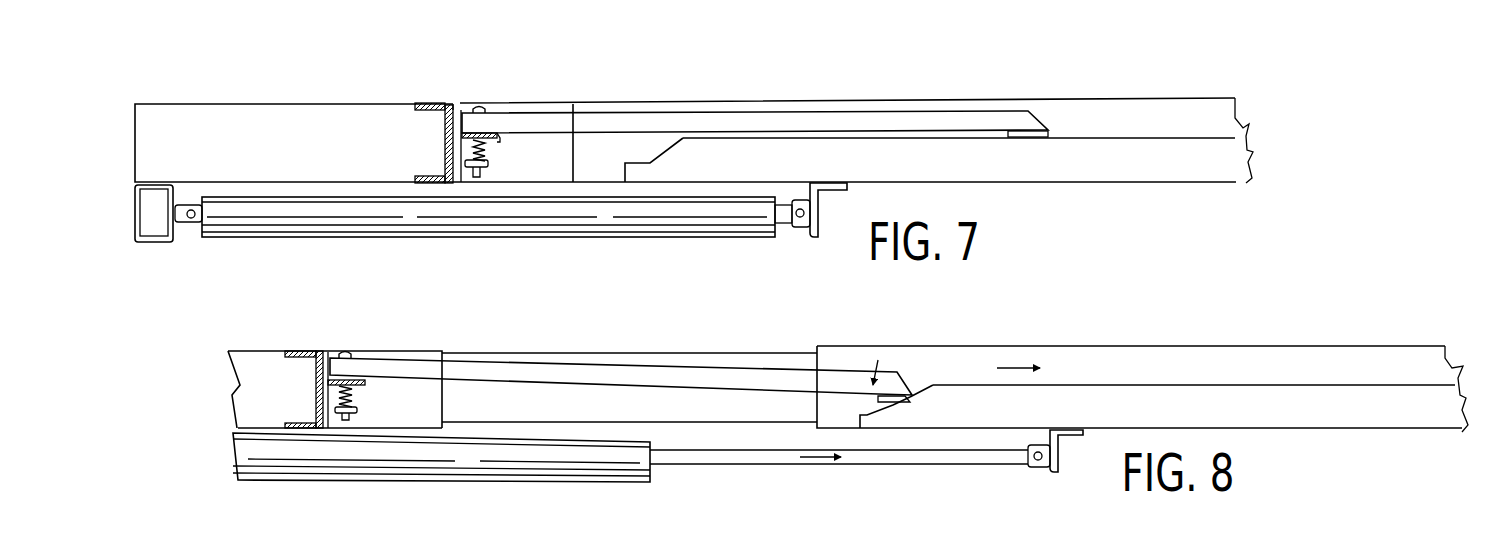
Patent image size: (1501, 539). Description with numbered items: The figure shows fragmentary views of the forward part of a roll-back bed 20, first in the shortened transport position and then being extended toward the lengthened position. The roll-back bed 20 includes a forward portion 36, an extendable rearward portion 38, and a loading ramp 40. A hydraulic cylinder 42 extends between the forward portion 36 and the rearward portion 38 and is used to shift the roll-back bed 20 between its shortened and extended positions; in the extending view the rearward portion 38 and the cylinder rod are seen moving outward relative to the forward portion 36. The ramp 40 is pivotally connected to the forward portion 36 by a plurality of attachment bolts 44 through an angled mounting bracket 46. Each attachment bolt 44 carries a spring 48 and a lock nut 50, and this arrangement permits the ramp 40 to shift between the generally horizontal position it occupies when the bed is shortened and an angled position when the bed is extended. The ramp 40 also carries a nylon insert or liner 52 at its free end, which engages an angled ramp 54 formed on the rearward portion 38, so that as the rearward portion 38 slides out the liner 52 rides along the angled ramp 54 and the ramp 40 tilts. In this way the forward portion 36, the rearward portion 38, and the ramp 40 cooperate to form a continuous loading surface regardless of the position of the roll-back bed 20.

In FIG. 7, the roll-back bed 20 is at (902, 97).
In FIG. 8, the roll-back bed 20 is at (1105, 344).
In FIG. 7, the forward portion 36 is at (313, 103).
In FIG. 8, the forward portion 36 is at (335, 445).
In FIG. 7, the extendable rearward portion 38 is at (1110, 98).
In FIG. 8, the extendable rearward portion 38 is at (839, 446).
In FIG. 7, the loading ramp 40 is at (688, 118).
In FIG. 8, the loading ramp 40 is at (604, 371).
In FIG. 7, the hydraulic cylinder 42 is at (531, 238).
In FIG. 8, the hydraulic cylinder 42 is at (511, 473).
In FIG. 7, the attachment bolt 44 is at (481, 107).
In FIG. 8, the attachment bolt 44 is at (346, 352).
In FIG. 7, the angled mounting bracket 46 is at (490, 148).
In FIG. 8, the angled mounting bracket 46 is at (361, 385).
In FIG. 7, the spring 48 is at (457, 148).
In FIG. 8, the spring 48 is at (325, 399).
In FIG. 7, the lock nut 50 is at (469, 177).
In FIG. 8, the lock nut 50 is at (350, 415).
In FIG. 7, the nylon insert or liner 52 is at (1030, 138).
In FIG. 8, the nylon insert or liner 52 is at (893, 413).
In FIG. 7, the angled ramp 54 is at (670, 153).
In FIG. 8, the angled ramp 54 is at (918, 394).